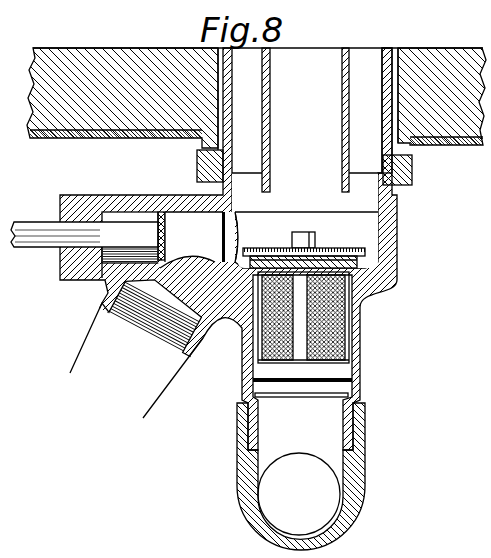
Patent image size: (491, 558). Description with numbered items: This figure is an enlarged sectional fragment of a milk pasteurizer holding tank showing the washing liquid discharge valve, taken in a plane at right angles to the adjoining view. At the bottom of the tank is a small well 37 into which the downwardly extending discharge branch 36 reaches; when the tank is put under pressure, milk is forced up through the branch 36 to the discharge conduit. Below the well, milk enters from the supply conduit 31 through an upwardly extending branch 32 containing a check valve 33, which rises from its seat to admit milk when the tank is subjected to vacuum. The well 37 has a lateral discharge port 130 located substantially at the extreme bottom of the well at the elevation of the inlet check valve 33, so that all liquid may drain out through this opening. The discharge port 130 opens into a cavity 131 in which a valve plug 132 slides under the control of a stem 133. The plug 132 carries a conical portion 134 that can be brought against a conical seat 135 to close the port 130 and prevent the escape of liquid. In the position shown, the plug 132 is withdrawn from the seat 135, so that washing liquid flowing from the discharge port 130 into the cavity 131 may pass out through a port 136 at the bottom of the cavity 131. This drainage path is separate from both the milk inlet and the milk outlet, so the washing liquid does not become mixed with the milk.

The supply conduit 31 is at (358, 497).
The branch 32 is at (360, 362).
The check valve 33 is at (345, 254).
The branch 36 is at (341, 121).
The well 37 is at (374, 62).
The discharge port 130 is at (227, 238).
The cavity 131 is at (182, 198).
The valve plug 132 is at (127, 218).
The stem 133 is at (33, 222).
The conical portion 134 is at (160, 238).
The conical seat 135 is at (222, 234).
The port 136 is at (150, 278).